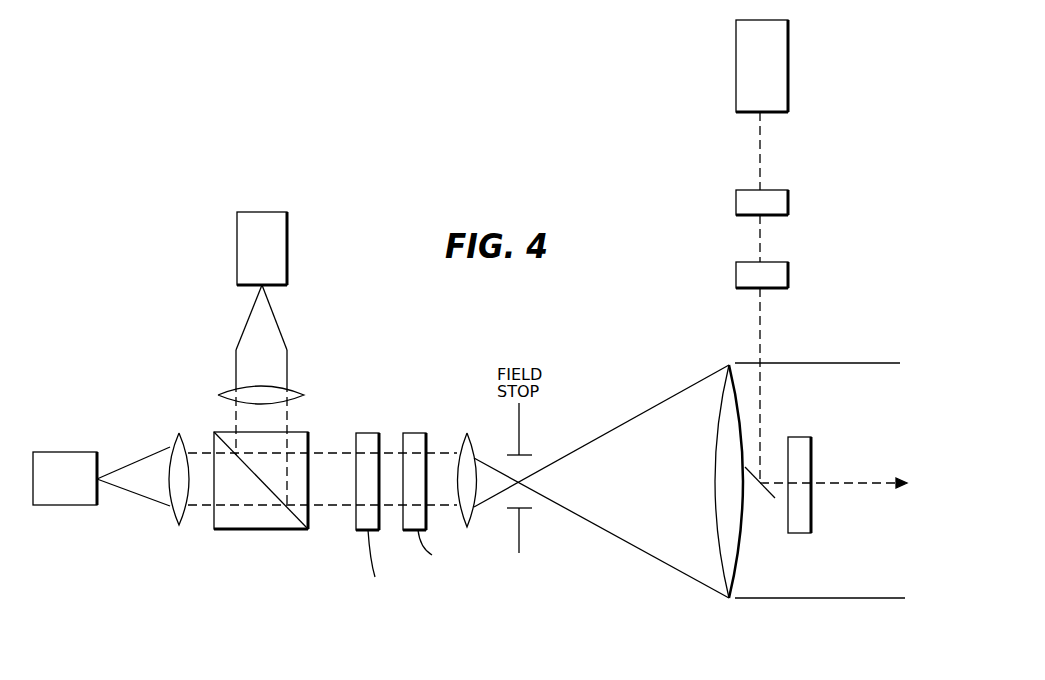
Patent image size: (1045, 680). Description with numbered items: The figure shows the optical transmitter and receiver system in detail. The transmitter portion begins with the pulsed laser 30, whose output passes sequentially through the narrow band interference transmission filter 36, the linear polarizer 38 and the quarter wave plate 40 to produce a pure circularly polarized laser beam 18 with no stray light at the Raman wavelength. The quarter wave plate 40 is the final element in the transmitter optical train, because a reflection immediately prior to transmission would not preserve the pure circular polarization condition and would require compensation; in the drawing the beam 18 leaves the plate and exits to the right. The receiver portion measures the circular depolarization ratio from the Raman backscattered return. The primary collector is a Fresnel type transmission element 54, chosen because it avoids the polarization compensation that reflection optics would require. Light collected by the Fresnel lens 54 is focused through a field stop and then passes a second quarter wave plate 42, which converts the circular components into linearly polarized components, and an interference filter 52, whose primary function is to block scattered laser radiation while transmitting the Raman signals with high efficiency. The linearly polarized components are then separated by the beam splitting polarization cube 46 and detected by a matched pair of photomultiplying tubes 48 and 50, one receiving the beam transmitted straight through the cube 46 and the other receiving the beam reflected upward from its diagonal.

The pulsed laser 30 is at (736, 70).
The narrow band interference transmission filter 36 is at (736, 204).
The linear polarizer 38 is at (736, 272).
The circularly polarized laser beam 18 is at (856, 482).
The quarter wave plate 40 is at (802, 437).
The Fresnel type transmission element 54 is at (722, 590).
The second quarter wave plate 42 is at (418, 432).
The interference filter 52 is at (370, 432).
The beam splitting polarization cube 46 is at (215, 529).
The photomultiplying tube 50 is at (237, 262).
The photomultiplying tube 48 is at (72, 452).